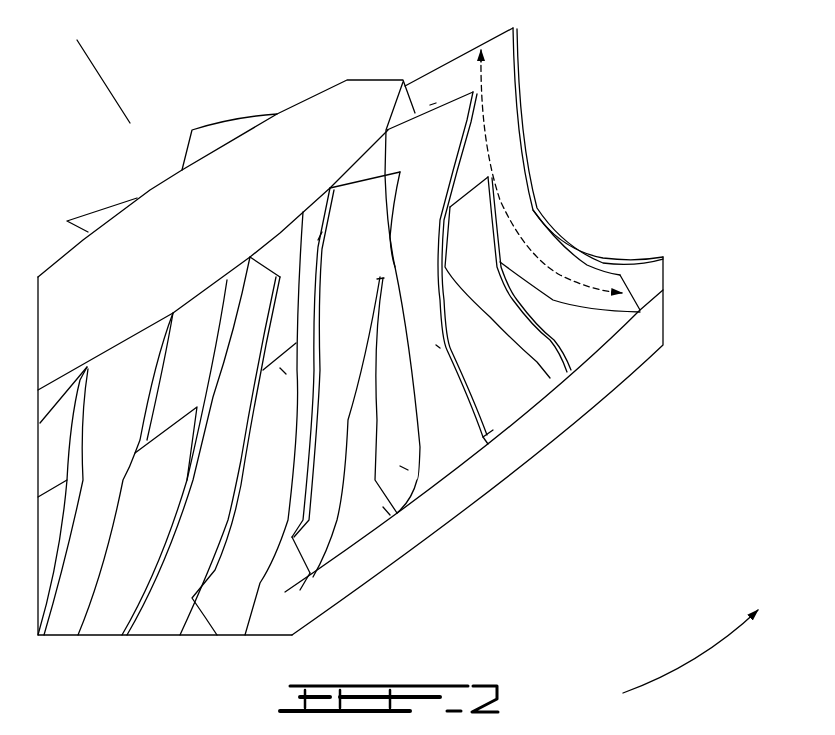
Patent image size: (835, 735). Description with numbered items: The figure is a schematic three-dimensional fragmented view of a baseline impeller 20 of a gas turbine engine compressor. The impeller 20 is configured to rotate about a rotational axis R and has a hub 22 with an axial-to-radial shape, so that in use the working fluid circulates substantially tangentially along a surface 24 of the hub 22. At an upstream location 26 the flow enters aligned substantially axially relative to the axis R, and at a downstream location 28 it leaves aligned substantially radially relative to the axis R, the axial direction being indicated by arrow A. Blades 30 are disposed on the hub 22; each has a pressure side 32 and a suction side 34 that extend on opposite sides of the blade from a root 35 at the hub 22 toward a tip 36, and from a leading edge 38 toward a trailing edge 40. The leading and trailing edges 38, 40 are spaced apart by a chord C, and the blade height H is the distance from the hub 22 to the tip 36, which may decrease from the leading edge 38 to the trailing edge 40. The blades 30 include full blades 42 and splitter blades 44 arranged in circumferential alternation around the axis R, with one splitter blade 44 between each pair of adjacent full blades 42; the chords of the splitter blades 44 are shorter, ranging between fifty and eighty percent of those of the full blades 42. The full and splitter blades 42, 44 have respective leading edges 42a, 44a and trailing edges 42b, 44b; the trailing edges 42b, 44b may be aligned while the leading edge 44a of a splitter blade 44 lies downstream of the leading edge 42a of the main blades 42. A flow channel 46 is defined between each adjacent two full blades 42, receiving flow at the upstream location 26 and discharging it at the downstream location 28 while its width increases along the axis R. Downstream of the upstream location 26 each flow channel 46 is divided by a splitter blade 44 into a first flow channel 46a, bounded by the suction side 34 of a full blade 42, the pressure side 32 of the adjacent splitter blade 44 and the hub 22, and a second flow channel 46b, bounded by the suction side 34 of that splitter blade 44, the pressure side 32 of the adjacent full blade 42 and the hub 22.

The impeller 20 is at (670, 72).
The hub 22 is at (668, 318).
The surface of the hub 24 is at (178, 357).
The upstream location 26 is at (316, 72).
The downstream location 28 is at (458, 612).
The blades 30 is at (634, 284).
The pressure sides 32 is at (460, 327).
The suction sides 34 is at (430, 347).
The roots 35 is at (320, 226).
The tips 36 is at (523, 96).
The leading edges 38 is at (437, 100).
The trailing edges 40 is at (203, 620).
The full blades 42 is at (408, 150).
The leading edge of full blade 42a is at (434, 102).
The trailing edge of full blade 42b is at (293, 557).
The splitter blades 44 is at (360, 322).
The leading edge of splitter blade 44a is at (283, 372).
The trailing edge of splitter blade 44b is at (383, 507).
The flow channel 46 is at (366, 264).
The first flow channel 46a is at (434, 440).
The second flow channel 46b is at (352, 472).
The rotational axis R is at (102, 72).
The chords C is at (495, 151).
The blade height H is at (405, 468).
The axial direction A is at (700, 660).